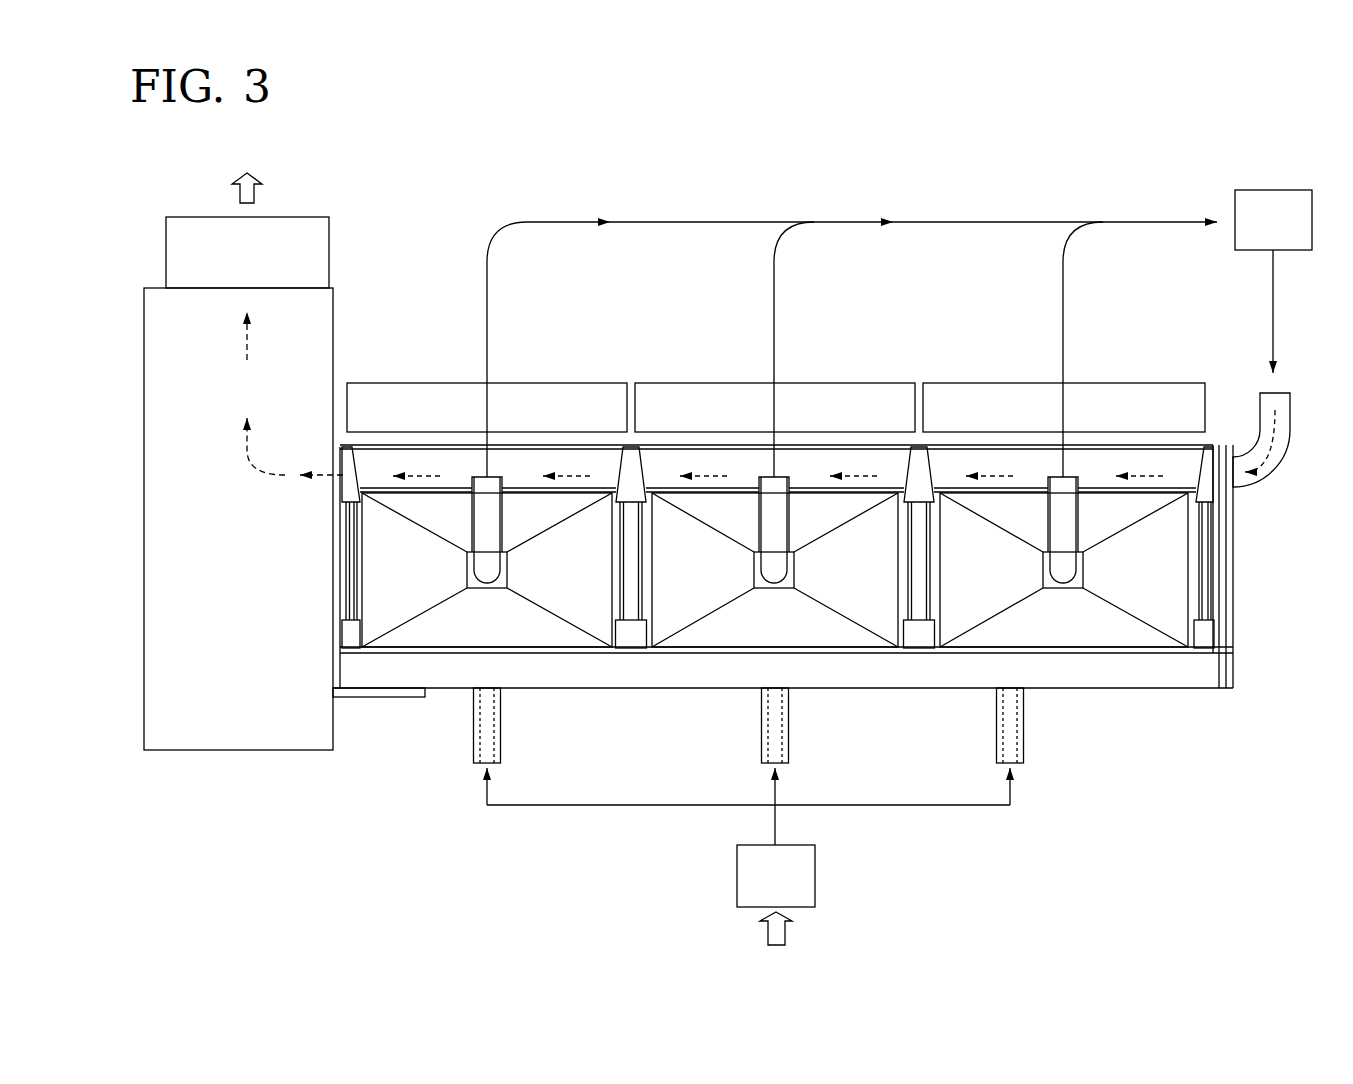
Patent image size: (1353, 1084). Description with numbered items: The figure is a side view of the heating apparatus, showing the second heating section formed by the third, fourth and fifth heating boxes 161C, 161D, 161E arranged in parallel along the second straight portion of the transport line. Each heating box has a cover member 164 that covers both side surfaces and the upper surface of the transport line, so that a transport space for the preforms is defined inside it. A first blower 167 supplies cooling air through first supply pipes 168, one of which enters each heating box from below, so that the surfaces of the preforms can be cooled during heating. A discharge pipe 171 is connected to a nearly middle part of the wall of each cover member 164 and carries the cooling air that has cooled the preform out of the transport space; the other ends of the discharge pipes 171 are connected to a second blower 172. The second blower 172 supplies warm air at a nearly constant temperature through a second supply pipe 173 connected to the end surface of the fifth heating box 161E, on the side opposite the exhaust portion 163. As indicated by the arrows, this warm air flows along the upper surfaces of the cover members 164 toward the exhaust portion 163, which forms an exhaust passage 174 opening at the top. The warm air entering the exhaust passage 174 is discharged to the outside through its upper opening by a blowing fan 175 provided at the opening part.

The blowing fan 175 is at (307, 256).
The exhaust portion 163 is at (312, 343).
The exhaust passage 174 is at (293, 519).
The cover member 164 is at (765, 637).
The third heating box 161C is at (408, 590).
The fourth heating box 161D is at (700, 590).
The fifth heating box 161E is at (1135, 587).
The discharge pipe 171 is at (492, 497).
The second blower 172 is at (1250, 207).
The second supply pipe 173 is at (1270, 418).
The first supply pipe 168 is at (490, 712).
The first blower 167 is at (800, 878).